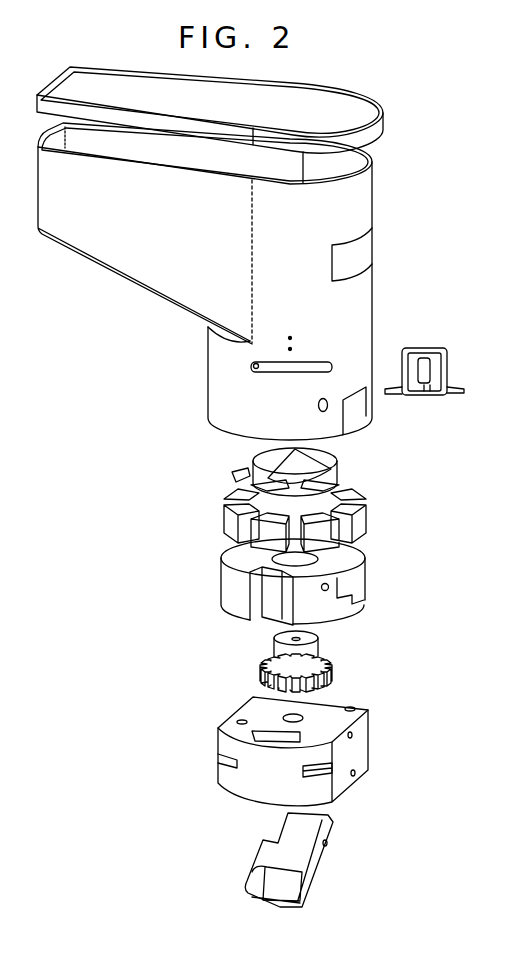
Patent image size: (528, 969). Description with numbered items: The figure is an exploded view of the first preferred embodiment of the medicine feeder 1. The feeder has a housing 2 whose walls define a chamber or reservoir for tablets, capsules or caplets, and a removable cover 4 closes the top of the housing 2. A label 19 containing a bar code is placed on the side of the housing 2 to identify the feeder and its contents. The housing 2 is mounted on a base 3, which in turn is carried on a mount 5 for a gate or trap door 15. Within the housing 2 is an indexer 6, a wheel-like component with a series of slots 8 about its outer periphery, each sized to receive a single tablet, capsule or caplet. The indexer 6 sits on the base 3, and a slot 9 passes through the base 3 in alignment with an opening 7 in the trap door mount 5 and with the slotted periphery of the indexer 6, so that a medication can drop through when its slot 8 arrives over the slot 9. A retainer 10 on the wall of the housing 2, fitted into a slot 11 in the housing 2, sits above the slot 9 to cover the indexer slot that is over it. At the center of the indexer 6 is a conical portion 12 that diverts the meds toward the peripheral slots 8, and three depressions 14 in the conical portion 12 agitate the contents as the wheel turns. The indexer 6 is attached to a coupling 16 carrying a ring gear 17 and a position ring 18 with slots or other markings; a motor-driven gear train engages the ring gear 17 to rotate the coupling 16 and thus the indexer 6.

The medicine feeder 1 is at (258, 253).
The housing 2 is at (259, 281).
The base 3 is at (286, 591).
The removable cover 4 is at (385, 125).
The mount 5 is at (274, 757).
The indexer 6 is at (290, 519).
The opening 7 is at (258, 735).
The slots 8 is at (272, 515).
The slot 9 is at (270, 602).
The retainer 10 is at (450, 362).
The slot 11 is at (253, 367).
The conical portion 12 is at (312, 463).
The depressions 14 is at (248, 463).
The trap door 15 is at (317, 863).
The coupling 16 is at (286, 666).
The ring gear 17 is at (333, 680).
The position ring 18 is at (333, 657).
The label 19 is at (370, 240).